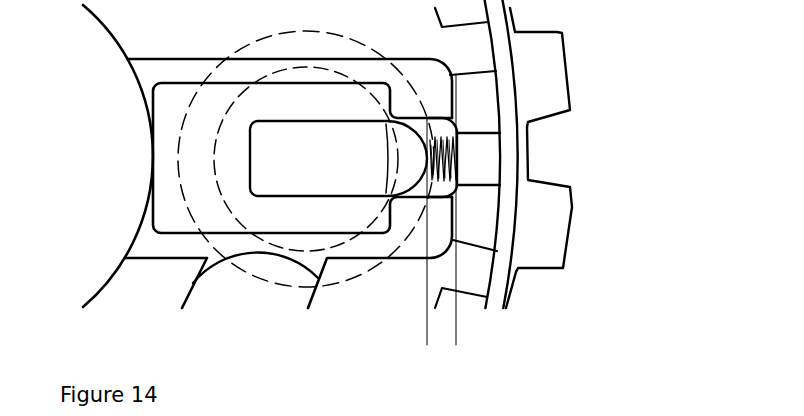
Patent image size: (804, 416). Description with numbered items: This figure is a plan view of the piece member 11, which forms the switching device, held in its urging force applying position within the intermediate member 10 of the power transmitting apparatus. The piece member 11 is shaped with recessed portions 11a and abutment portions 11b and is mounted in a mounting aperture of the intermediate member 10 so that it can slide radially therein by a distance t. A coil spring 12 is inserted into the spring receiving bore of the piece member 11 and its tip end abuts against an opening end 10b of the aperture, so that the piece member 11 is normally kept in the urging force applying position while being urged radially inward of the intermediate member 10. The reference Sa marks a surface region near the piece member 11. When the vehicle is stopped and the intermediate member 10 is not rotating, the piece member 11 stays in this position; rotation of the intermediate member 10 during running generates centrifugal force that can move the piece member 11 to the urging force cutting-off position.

The intermediate member 10 is at (600, 100).
The opening end 10b is at (450, 75).
The piece member 11 is at (154, 100).
The recessed portion 11a is at (197, 133).
The abutment portion 11b is at (168, 210).
The coil spring 12 is at (458, 163).
The surface Sa is at (262, 262).
The distance t is at (398, 337).